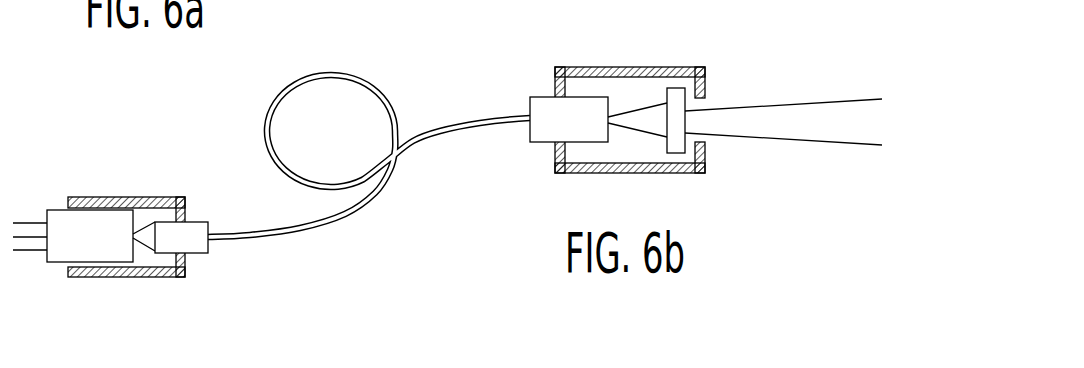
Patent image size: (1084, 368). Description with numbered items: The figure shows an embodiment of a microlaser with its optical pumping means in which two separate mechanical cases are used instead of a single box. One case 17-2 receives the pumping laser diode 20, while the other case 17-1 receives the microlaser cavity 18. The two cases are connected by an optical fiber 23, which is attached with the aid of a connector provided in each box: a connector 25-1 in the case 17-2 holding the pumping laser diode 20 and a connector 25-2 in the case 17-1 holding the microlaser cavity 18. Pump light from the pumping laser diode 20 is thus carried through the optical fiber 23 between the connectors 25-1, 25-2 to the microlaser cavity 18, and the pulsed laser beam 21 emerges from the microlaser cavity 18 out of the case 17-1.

The pumping laser diode 20 is at (57, 210).
The case 17-2 is at (135, 198).
The connector 25-1 is at (195, 227).
The optical fiber 23 is at (385, 194).
The connector 25-2 is at (540, 133).
The case 17-1 is at (605, 68).
The microlaser cavity 18 is at (675, 93).
The pulsed laser beam 21 is at (833, 134).